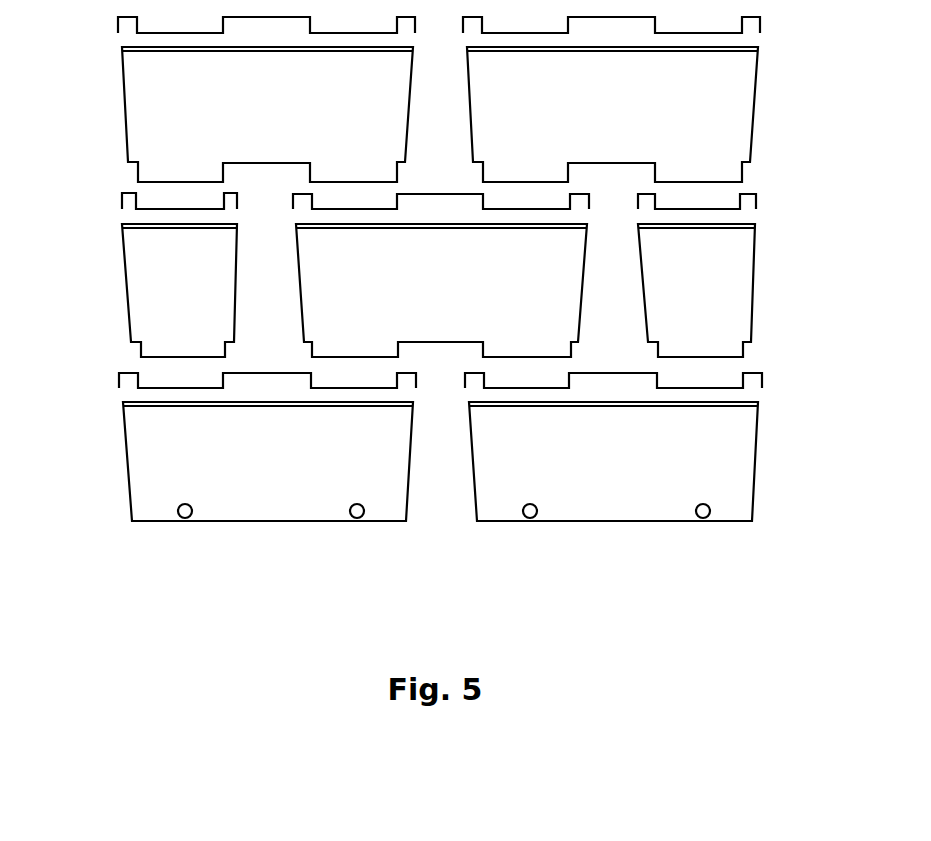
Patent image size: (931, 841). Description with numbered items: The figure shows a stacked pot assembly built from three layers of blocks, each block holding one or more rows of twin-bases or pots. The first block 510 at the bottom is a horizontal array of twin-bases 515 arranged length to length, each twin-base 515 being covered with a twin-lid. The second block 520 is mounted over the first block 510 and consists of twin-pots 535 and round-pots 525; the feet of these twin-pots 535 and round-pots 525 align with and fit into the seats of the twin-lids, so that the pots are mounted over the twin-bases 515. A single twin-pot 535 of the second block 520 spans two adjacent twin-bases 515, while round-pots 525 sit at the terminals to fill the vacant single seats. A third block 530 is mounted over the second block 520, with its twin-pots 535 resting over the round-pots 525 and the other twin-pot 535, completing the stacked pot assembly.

The first block 510 is at (98, 460).
The twin-bases 515 is at (752, 468).
The second block 520 is at (98, 299).
The round-pots 525 is at (754, 298).
The third block 530 is at (98, 137).
The twin-pots 535 is at (581, 313).